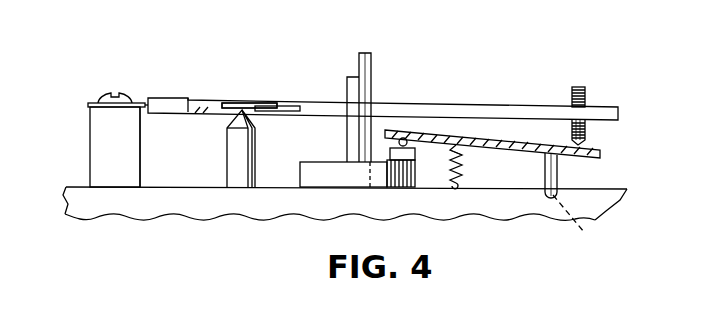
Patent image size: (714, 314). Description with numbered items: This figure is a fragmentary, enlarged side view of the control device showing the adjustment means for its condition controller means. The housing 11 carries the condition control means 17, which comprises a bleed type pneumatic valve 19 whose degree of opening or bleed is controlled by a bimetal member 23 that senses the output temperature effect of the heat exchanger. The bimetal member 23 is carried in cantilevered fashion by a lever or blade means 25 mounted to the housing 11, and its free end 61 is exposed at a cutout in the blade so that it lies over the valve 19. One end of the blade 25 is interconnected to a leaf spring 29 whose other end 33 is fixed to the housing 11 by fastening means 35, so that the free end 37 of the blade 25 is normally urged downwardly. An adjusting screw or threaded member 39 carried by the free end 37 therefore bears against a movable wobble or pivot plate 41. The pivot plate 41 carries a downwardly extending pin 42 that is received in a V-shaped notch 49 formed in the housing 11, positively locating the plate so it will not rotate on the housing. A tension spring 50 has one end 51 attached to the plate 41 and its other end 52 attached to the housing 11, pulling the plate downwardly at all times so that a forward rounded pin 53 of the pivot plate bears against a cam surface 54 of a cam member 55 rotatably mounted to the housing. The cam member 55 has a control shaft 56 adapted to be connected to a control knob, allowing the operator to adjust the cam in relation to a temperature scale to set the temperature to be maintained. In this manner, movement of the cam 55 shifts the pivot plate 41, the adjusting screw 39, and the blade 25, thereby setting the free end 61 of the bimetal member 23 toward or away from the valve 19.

The housing 11 is at (303, 208).
The condition control means 17 is at (222, 92).
The bleed type pneumatic valve 19 is at (233, 118).
The bimetal member 23 is at (263, 104).
The lever or blade means 25 is at (470, 108).
The leaf spring 29 is at (143, 102).
The other end of leaf spring 33 is at (92, 103).
The fastening means 35 is at (101, 100).
The free end of blade 37 is at (605, 107).
The adjusting screw or threaded member 39 is at (587, 133).
The pivot or wobble plate 41 is at (602, 153).
The pin 42 is at (559, 173).
The V-shaped notch 49 is at (583, 221).
The tension spring 50 is at (468, 160).
The one end of tension spring 51 is at (464, 150).
The other end of tension spring 52 is at (453, 184).
The forward rounded pin 53 is at (401, 138).
The cam surface 54 is at (414, 148).
The cam member 55 is at (326, 162).
The control shaft 56 is at (371, 62).
The free end of bimetal member 61 is at (227, 104).